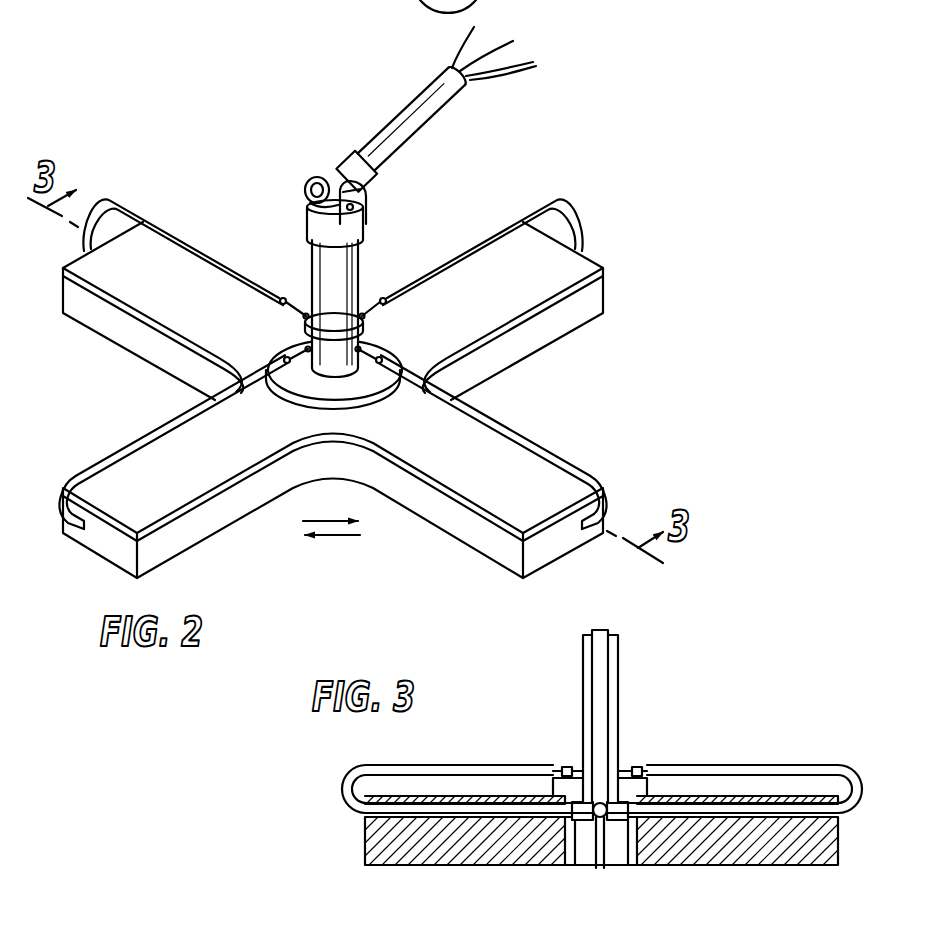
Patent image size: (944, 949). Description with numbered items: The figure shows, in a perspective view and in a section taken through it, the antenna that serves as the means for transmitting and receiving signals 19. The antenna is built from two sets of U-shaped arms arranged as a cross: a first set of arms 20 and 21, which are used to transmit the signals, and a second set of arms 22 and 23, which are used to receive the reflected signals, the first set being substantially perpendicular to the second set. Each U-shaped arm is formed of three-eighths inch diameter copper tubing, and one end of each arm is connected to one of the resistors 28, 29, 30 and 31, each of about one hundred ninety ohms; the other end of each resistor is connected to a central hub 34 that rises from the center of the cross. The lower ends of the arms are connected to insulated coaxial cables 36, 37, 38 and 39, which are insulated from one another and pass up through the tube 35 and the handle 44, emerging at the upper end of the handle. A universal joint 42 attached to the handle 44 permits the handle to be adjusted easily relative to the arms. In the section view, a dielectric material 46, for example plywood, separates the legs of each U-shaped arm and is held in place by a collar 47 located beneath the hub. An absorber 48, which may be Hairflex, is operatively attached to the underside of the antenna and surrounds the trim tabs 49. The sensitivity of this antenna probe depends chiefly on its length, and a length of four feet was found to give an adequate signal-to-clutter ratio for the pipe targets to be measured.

In FIG. 2, the means for transmitting and receiving signals 19 is at (630, 238).
In FIG. 2, the arm 20 is at (212, 244).
In FIG. 3, the arm 20 is at (430, 751).
In FIG. 2, the arm 21 is at (528, 422).
In FIG. 3, the arm 21 is at (702, 751).
In FIG. 2, the arm 22 is at (163, 415).
In FIG. 2, the arm 23 is at (498, 219).
In FIG. 2, the resistor 28 is at (300, 310).
In FIG. 3, the resistor 28 is at (568, 767).
In FIG. 2, the resistor 29 is at (392, 357).
In FIG. 3, the resistor 29 is at (638, 767).
In FIG. 2, the resistor 30 is at (276, 357).
In FIG. 2, the resistor 31 is at (370, 312).
In FIG. 2, the central hub 34 is at (360, 330).
In FIG. 2, the tube 35 is at (312, 244).
In FIG. 2, the insulated coaxial cable 36 is at (526, 61).
In FIG. 2, the insulated coaxial cable 37 is at (514, 44).
In FIG. 2, the insulated coaxial cable 38 is at (490, 38).
In FIG. 2, the insulated coaxial cable 39 is at (452, 50).
In FIG. 2, the universal joint 42 is at (347, 222).
In FIG. 2, the handle 44 is at (421, 134).
In FIG. 3, the dielectric material 46 is at (760, 800).
In FIG. 2, the collar 47 is at (372, 380).
In FIG. 3, the collar 47 is at (565, 797).
In FIG. 3, the absorber 48 is at (777, 858).
In FIG. 3, the trim tabs 49 is at (610, 866).